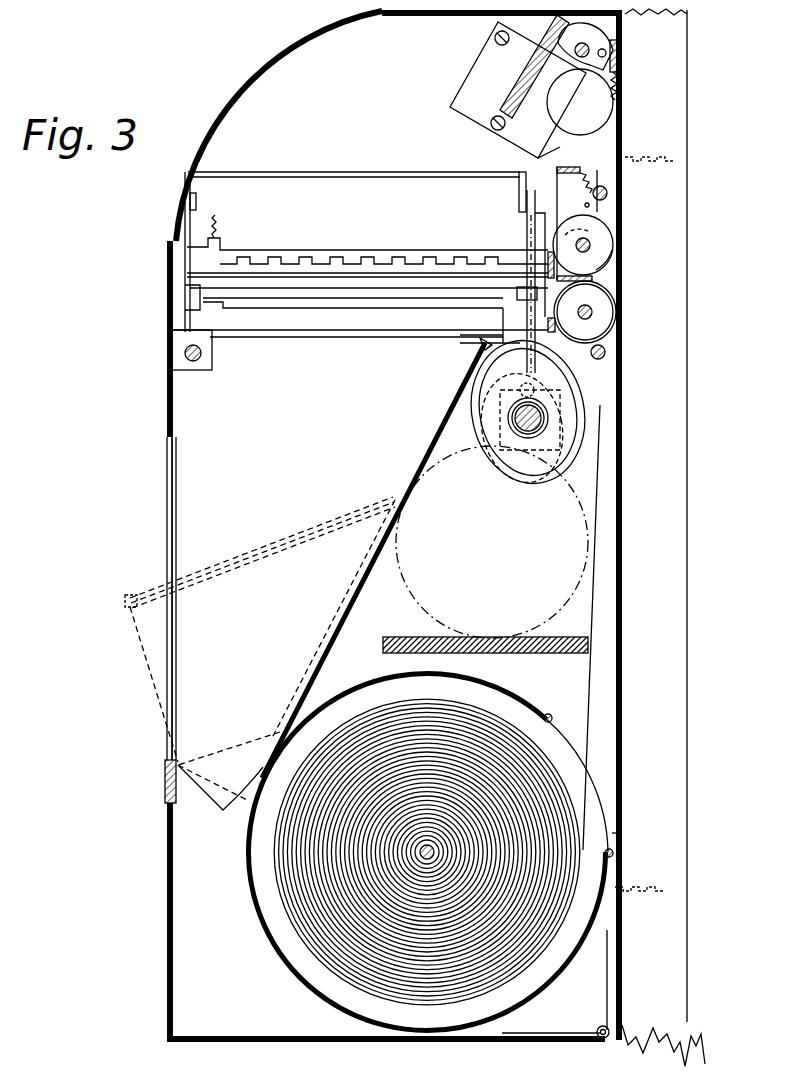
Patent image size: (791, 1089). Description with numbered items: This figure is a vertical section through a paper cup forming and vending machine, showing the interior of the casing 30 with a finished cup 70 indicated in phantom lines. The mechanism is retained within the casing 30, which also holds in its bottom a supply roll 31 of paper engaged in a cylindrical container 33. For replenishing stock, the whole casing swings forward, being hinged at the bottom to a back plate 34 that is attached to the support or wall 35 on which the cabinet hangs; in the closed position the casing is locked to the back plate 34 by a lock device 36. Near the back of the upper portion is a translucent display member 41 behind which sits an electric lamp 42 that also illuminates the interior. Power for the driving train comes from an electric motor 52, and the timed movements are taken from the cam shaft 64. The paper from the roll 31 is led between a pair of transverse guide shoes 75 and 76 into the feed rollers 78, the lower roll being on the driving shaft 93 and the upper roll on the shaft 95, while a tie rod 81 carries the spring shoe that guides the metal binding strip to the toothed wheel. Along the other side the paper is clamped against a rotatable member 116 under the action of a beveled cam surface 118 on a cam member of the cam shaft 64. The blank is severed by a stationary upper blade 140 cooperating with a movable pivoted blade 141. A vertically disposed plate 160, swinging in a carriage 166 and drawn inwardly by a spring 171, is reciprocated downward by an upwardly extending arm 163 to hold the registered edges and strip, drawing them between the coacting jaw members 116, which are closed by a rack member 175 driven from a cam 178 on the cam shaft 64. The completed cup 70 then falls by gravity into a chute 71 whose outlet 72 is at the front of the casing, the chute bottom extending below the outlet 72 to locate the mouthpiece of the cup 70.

The casing 30 is at (255, 1042).
The supply roll 31 is at (597, 493).
The cylindrical container 33 is at (482, 730).
The back plate 34 is at (618, 833).
The support or wall 35 is at (662, 932).
The lock device 36 is at (588, 33).
The display member 41 is at (514, 78).
The electric lamp 42 is at (587, 130).
The electric motor 52 is at (563, 542).
The cam shaft 64 is at (517, 423).
The cup 70 is at (147, 640).
The chute 71 is at (213, 477).
The outlet 72 is at (168, 452).
The upper guide shoe 75 is at (605, 271).
The lower guide shoe 76 is at (604, 299).
The feed rollers 78 is at (605, 240).
The tie rod 81 is at (606, 356).
The driving shaft 93 is at (592, 312).
The shaft 95 is at (583, 245).
The rotatable member 116 is at (202, 290).
The beveled cam surface 118 is at (473, 402).
The stationary upper blade 140 is at (548, 262).
The movable pivoted blade 141 is at (553, 325).
The plate 160 is at (359, 273).
The arm 163 is at (481, 345).
The carriage 166 is at (362, 176).
The spring 171 is at (214, 222).
The rack member 175 is at (537, 337).
The cam 178 is at (516, 484).